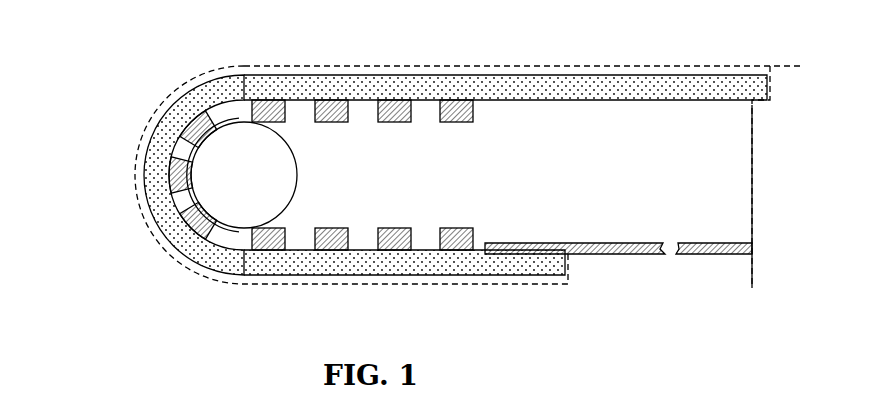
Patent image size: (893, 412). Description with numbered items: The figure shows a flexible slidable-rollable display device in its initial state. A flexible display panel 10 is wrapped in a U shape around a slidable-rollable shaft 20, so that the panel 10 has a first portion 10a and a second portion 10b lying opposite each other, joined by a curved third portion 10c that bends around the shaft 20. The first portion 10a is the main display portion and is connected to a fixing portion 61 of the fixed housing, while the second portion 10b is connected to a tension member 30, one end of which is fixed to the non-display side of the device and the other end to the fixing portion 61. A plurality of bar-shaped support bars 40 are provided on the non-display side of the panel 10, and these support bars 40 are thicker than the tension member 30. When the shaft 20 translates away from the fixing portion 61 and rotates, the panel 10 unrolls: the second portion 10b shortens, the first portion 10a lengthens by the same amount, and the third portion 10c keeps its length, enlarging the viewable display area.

The flexible display panel 10 is at (50, 55).
The first portion 10a is at (245, 62).
The second portion 10b is at (245, 282).
The third portion 10c is at (145, 190).
The slidable-rollable shaft 20 is at (263, 190).
The tension member 30 is at (632, 255).
The support bars 40 is at (437, 253).
The fixing portion 61 is at (772, 64).